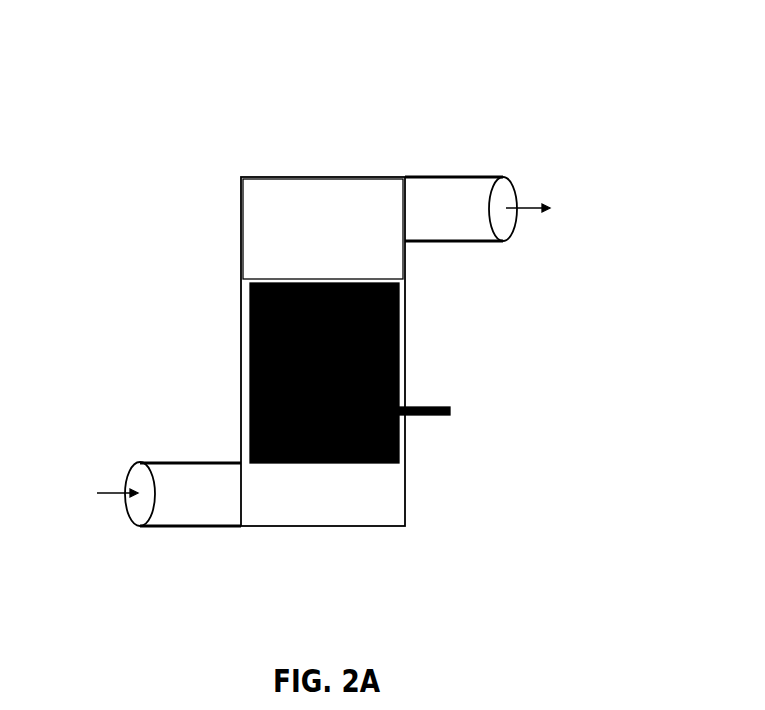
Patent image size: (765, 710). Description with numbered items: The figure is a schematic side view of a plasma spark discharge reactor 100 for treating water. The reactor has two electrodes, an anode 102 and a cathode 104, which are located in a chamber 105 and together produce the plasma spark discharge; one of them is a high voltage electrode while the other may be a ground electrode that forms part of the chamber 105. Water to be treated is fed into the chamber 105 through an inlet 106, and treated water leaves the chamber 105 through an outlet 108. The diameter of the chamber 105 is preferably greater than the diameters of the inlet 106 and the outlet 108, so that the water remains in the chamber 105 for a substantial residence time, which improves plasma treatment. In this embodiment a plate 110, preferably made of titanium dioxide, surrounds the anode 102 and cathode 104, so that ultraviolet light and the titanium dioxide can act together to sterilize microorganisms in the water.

The plasma spark discharge reactor 100 is at (140, 88).
The anode 102 is at (364, 351).
The cathode 104 is at (258, 385).
The chamber 105 is at (318, 208).
The inlet 106 is at (137, 509).
The outlet 108 is at (502, 197).
The plate 110 is at (390, 362).